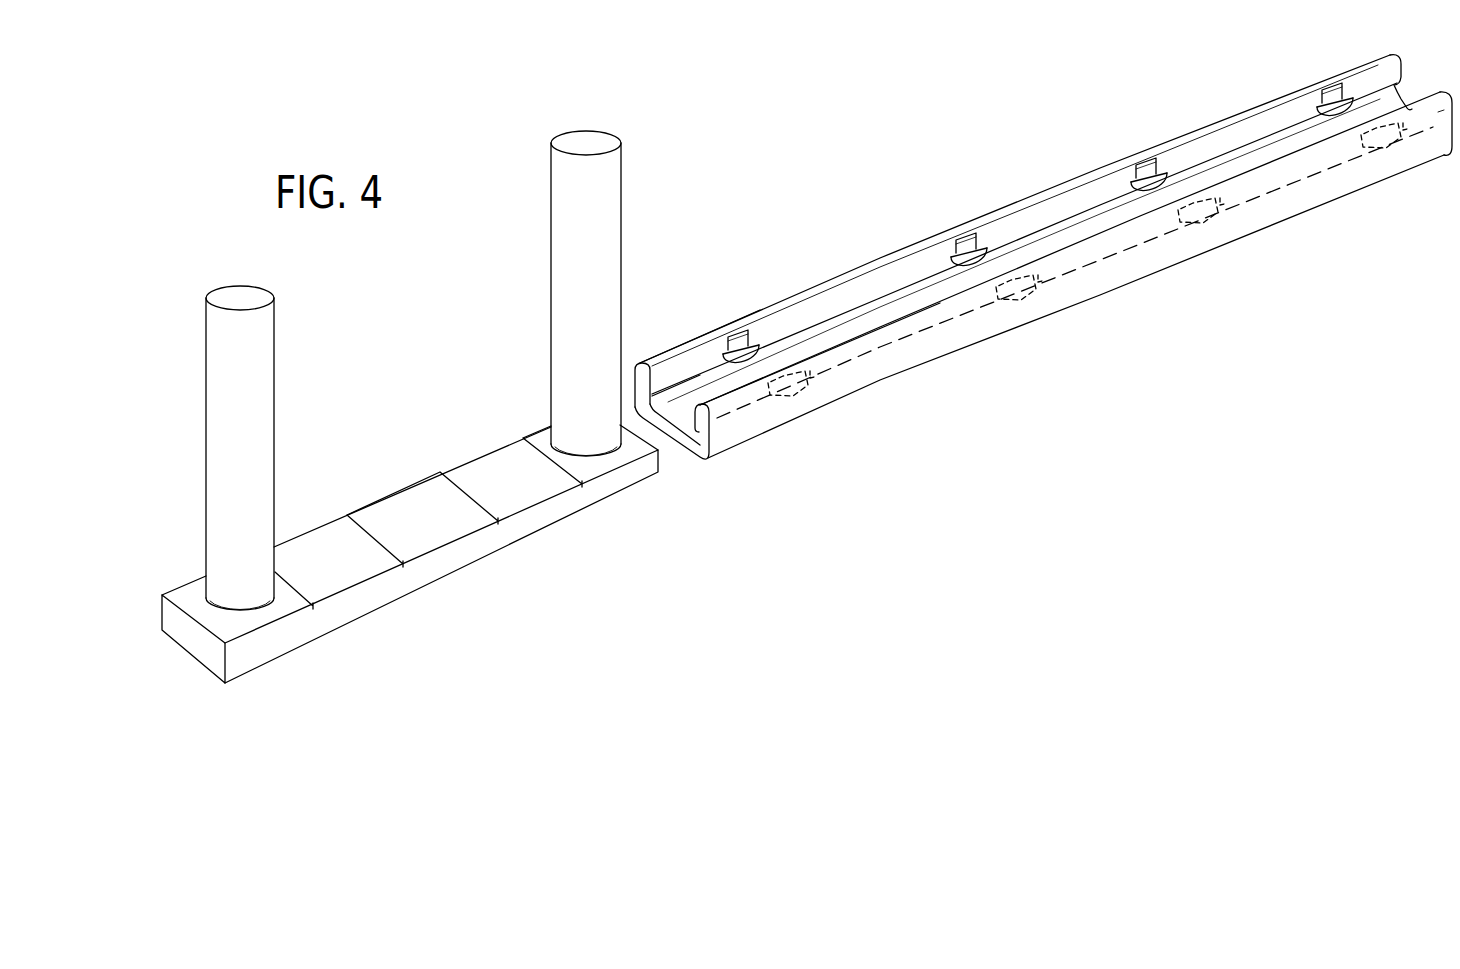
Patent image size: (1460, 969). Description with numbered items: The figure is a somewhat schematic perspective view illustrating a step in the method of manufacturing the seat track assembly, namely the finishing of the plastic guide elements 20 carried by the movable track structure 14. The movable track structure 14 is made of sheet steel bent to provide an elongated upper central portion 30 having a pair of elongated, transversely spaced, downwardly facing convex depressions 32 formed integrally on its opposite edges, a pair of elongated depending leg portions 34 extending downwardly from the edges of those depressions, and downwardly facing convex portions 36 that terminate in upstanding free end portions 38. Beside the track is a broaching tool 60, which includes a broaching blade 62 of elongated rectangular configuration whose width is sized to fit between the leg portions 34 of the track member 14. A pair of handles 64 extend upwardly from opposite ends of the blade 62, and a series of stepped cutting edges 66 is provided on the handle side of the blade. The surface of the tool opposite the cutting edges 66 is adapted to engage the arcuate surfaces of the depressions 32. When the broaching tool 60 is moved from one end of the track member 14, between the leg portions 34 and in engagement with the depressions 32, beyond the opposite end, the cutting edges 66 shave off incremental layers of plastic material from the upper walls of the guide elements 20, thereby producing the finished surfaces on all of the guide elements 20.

The movable track structure 14 is at (1075, 313).
The guide elements 20 is at (767, 346).
The upper central portion 30 is at (683, 423).
The downwardly facing convex depressions 32 is at (662, 408).
The depending leg portions 34 is at (770, 400).
The downwardly facing convex portions 36 is at (938, 303).
The upstanding free end portions 38 is at (1071, 198).
The broaching tool 60 is at (410, 420).
The broaching blade 62 is at (275, 642).
The handles 64 is at (268, 377).
The stepped cutting edges 66 is at (295, 583).